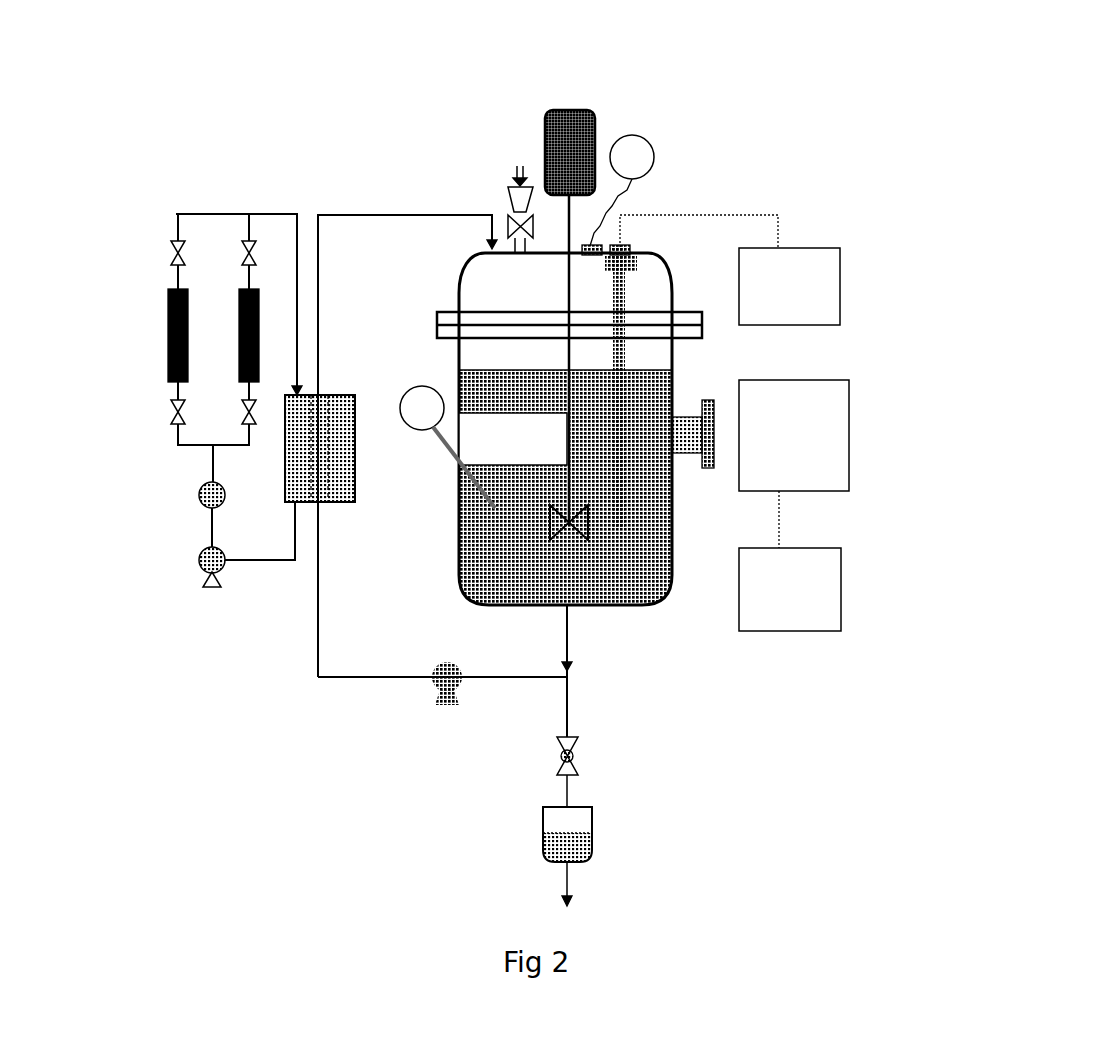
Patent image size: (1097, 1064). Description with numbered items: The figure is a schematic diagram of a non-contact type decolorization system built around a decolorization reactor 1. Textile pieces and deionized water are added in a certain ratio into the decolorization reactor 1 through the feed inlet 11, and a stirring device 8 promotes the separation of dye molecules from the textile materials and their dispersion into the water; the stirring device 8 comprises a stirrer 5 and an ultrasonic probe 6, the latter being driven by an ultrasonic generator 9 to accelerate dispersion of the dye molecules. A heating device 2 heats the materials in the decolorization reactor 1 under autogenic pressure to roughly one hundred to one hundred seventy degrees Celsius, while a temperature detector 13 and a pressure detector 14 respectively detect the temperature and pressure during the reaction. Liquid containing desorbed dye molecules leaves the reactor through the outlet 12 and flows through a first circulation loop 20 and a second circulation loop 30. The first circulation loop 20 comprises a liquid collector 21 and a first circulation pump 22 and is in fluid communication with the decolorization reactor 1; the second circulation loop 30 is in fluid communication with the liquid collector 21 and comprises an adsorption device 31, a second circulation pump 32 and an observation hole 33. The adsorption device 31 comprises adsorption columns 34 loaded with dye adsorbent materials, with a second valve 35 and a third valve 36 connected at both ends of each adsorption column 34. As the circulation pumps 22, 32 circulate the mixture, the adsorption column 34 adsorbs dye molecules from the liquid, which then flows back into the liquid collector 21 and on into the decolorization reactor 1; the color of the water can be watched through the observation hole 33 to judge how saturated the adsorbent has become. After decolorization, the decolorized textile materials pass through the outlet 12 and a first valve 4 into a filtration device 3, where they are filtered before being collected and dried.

The decolorization reactor 1 is at (672, 363).
The heating device 2 is at (841, 567).
The filtration device 3 is at (592, 840).
The first valve 4 is at (578, 755).
The stirrer 5 is at (588, 107).
The ultrasonic probe 6 is at (653, 258).
The stirring device 8 is at (630, 247).
The ultrasonic generator 9 is at (840, 293).
The feed inlet 11 is at (513, 205).
The outlet 12 is at (570, 607).
The temperature detector 13 is at (413, 388).
The pressure detector 14 is at (655, 157).
The first circulation loop 20 is at (348, 214).
The liquid collector 21 is at (355, 489).
The first circulation pump 22 is at (397, 740).
The second circulation loop 30 is at (280, 214).
The adsorption device 31 is at (173, 432).
The second circulation pump 32 is at (202, 570).
The observation hole 33 is at (193, 505).
The adsorption column 34 is at (240, 315).
The second valve 35 is at (190, 253).
The third valve 36 is at (190, 412).